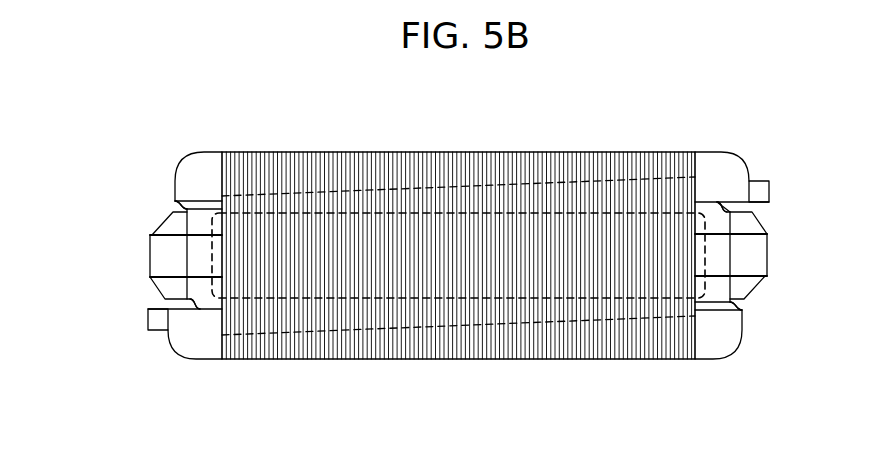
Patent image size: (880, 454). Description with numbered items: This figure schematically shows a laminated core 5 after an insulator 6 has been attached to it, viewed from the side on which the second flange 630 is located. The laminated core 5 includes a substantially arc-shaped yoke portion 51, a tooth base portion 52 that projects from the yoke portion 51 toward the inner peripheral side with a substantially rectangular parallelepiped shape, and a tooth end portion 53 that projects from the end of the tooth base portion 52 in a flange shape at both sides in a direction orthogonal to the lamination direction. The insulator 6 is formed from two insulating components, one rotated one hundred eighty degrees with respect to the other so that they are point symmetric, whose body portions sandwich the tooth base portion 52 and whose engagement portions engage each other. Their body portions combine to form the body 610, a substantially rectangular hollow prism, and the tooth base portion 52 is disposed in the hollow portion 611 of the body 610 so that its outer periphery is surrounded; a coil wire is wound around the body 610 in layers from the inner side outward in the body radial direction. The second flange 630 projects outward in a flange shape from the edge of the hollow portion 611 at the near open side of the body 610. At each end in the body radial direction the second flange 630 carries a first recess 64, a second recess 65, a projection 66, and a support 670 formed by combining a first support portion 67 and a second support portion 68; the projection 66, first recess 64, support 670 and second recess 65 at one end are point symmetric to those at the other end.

The laminated core 5 is at (470, 224).
The insulator 6 is at (781, 220).
The yoke portion 51 is at (603, 162).
The tooth base portion 52 is at (653, 208).
The tooth end portion 53 is at (543, 190).
The body 610 is at (720, 212).
The hollow portion 611 is at (482, 212).
The second flange 630 is at (136, 277).
The first recess 64 is at (158, 305).
The second recess 65 is at (180, 204).
The projection 66 is at (152, 317).
The first support portion 67 is at (166, 241).
The second support portion 68 is at (177, 223).
The support 670 is at (136, 218).